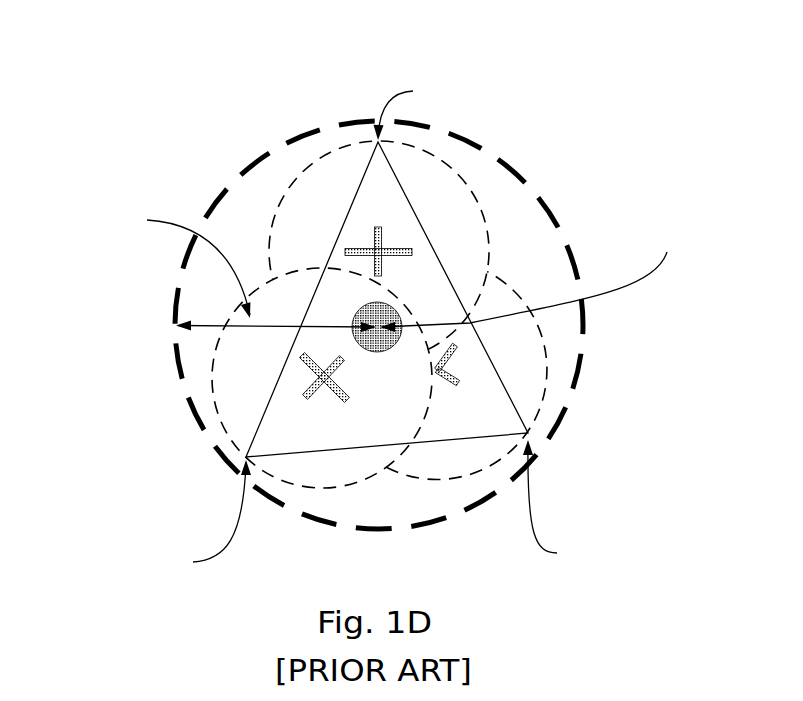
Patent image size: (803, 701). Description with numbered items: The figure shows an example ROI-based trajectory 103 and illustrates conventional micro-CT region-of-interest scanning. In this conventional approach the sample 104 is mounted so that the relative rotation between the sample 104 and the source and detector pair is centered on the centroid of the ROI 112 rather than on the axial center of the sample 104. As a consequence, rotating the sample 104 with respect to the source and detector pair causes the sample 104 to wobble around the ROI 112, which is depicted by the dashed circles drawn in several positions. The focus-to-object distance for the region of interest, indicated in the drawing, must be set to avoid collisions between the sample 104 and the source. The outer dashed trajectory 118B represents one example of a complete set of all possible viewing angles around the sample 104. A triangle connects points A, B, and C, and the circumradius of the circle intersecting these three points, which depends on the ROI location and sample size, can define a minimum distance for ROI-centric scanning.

The ROI-based trajectory 103 is at (165, 97).
The ROI 112 is at (372, 299).
The sample 104 is at (543, 349).
The trajectory 118B is at (570, 413).